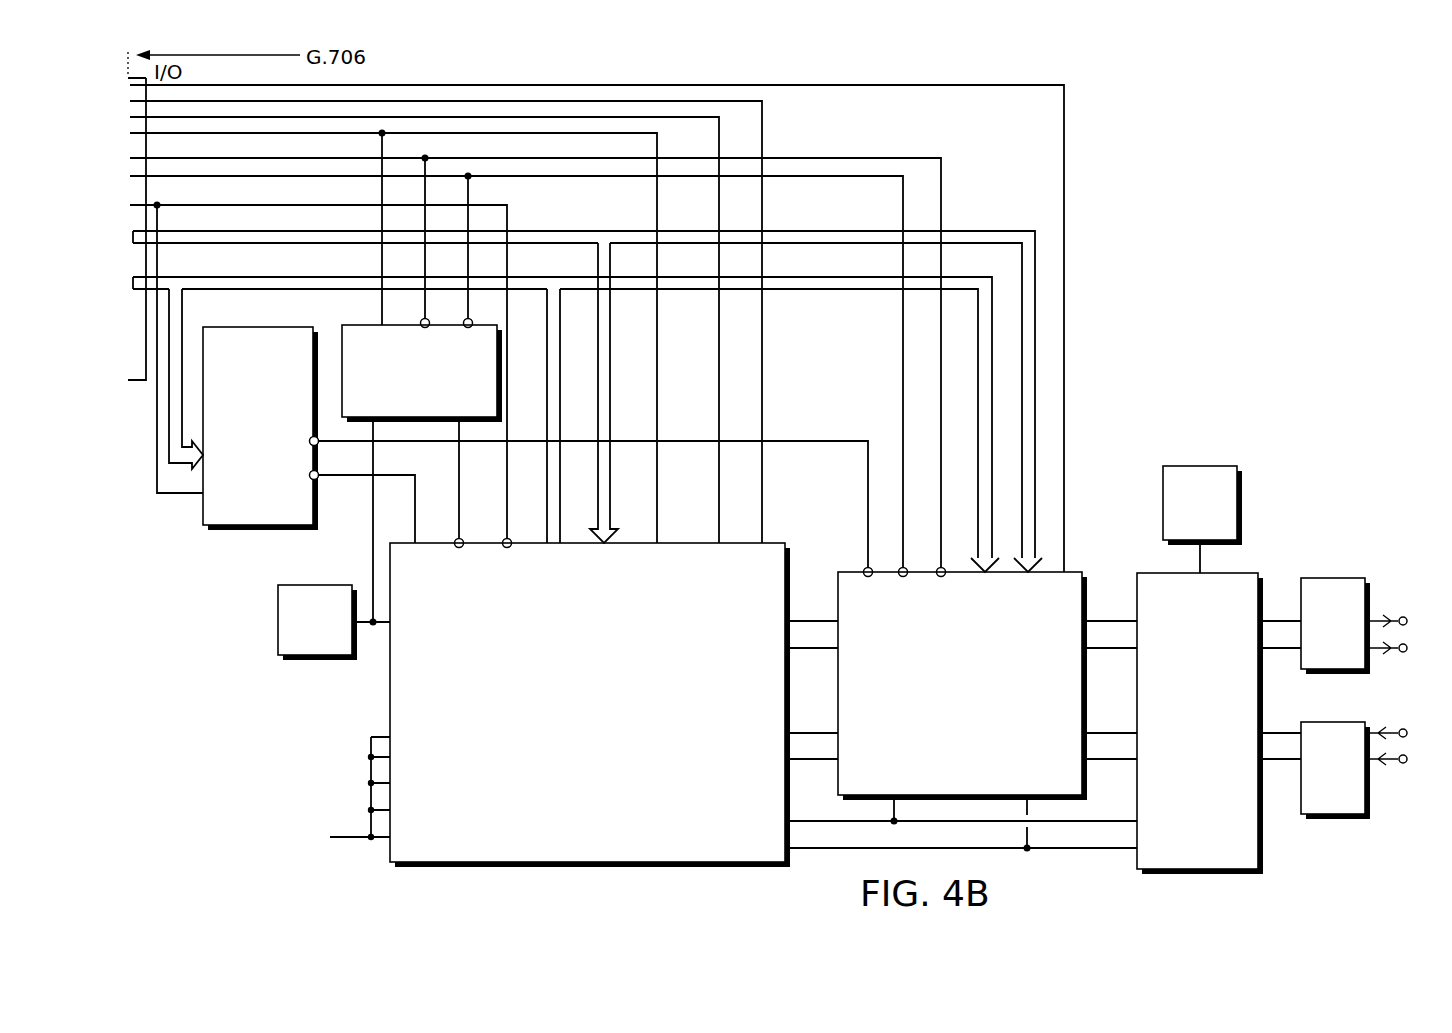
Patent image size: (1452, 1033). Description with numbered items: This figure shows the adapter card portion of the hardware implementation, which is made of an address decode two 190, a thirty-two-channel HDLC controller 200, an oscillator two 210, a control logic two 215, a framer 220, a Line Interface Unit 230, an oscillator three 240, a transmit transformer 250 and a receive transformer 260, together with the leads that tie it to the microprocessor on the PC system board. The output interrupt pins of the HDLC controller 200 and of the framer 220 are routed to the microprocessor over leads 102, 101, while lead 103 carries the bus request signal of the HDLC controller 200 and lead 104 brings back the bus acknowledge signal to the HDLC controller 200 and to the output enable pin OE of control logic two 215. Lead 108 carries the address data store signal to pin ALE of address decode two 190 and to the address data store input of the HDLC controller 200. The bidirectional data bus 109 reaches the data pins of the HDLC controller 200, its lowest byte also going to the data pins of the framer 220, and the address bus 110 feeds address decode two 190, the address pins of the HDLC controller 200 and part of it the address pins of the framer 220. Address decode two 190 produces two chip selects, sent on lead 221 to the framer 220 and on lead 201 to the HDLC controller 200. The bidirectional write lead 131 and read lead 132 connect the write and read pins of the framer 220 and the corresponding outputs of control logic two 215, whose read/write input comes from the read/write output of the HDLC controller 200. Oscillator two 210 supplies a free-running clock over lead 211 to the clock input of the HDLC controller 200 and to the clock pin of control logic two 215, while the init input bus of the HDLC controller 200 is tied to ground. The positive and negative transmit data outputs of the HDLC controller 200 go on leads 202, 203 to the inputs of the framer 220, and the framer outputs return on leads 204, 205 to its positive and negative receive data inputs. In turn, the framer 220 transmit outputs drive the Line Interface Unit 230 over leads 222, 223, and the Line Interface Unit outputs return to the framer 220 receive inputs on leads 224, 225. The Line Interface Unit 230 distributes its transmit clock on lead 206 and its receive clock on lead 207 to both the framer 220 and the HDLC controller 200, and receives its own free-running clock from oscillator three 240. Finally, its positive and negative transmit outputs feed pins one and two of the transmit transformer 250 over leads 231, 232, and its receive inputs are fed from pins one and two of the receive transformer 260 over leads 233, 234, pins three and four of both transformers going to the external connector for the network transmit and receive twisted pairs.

The lead 101 is at (758, 84).
The lead 102 is at (719, 133).
The lead 103 is at (762, 110).
The lead 104 is at (657, 148).
The lead 108 is at (342, 367).
The data bus 109 is at (780, 232).
The address bus 110 is at (843, 290).
The bidirectional write lead 131 is at (822, 158).
The bidirectional read lead 132 is at (828, 178).
The address decode 2 190 is at (222, 327).
The 32-channel HDLC controller 200 is at (775, 543).
The lead 201 is at (350, 478).
The lead 202 is at (812, 618).
The lead 203 is at (812, 651).
The lead 204 is at (812, 730).
The lead 205 is at (812, 762).
The lead 206 is at (845, 822).
The lead 207 is at (845, 850).
The oscillator 2 210 is at (278, 652).
The lead 211 is at (373, 528).
The control logic 2 215 is at (362, 323).
The framer 220 is at (962, 654).
The lead 221 is at (805, 440).
The lead 222 is at (1110, 618).
The lead 223 is at (1110, 651).
The lead 224 is at (1110, 730).
The lead 225 is at (1110, 762).
The Line Interface Unit 230 is at (1243, 573).
The lead 231 is at (1280, 618).
The lead 232 is at (1280, 651).
The lead 233 is at (1280, 730).
The lead 234 is at (1280, 762).
The oscillator 3 240 is at (1210, 466).
The transmit transformer 250 is at (1340, 578).
The receive transformer 260 is at (1340, 722).